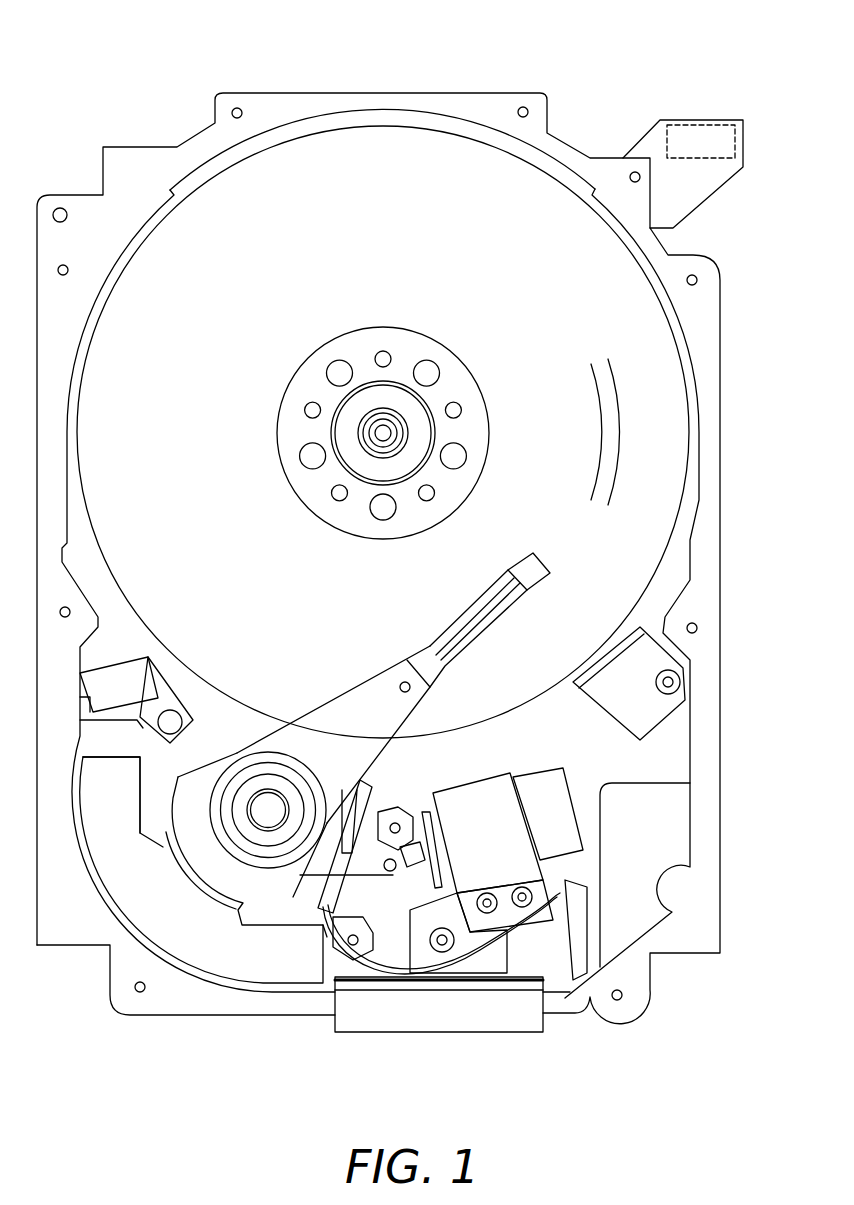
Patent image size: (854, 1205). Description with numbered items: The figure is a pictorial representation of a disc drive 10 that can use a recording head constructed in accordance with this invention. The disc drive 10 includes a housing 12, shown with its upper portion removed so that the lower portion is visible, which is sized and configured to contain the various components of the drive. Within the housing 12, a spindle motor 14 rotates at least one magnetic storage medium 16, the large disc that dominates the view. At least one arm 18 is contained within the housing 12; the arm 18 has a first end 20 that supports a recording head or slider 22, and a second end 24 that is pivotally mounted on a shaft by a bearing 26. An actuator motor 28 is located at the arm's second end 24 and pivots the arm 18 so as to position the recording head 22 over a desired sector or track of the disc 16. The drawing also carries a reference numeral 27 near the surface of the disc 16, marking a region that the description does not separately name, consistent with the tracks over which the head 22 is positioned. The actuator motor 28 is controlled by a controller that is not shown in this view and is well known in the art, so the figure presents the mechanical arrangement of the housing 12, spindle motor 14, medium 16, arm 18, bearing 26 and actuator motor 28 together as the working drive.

The disc drive 10 is at (140, 98).
The housing 12 is at (507, 180).
The spindle motor 14 is at (383, 433).
The magnetic storage medium 16 is at (379, 250).
The arm 18 is at (382, 690).
The first end 20 is at (463, 612).
The recording head or slider 22 is at (538, 553).
The second end 24 is at (288, 753).
The bearing 26 is at (268, 806).
The data tracks 27 is at (622, 430).
The actuator motor 28 is at (140, 870).